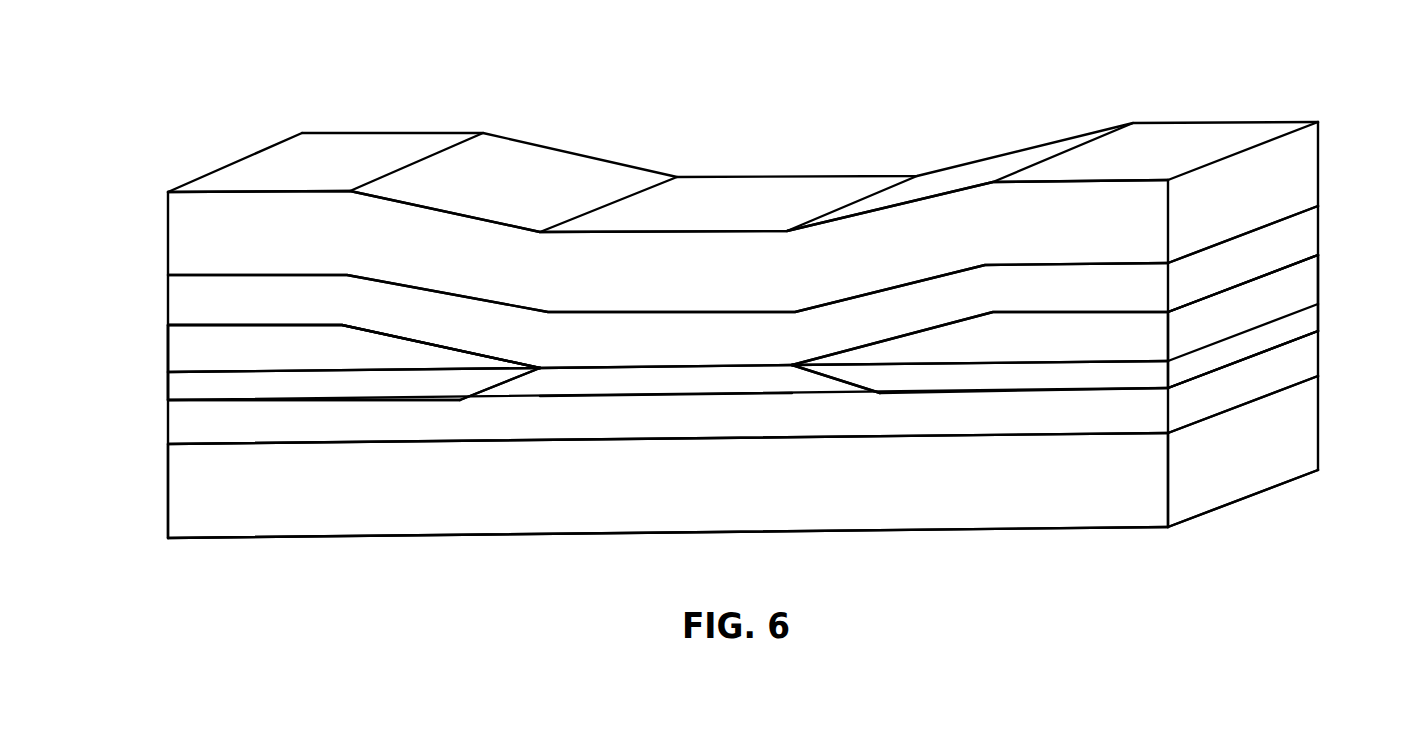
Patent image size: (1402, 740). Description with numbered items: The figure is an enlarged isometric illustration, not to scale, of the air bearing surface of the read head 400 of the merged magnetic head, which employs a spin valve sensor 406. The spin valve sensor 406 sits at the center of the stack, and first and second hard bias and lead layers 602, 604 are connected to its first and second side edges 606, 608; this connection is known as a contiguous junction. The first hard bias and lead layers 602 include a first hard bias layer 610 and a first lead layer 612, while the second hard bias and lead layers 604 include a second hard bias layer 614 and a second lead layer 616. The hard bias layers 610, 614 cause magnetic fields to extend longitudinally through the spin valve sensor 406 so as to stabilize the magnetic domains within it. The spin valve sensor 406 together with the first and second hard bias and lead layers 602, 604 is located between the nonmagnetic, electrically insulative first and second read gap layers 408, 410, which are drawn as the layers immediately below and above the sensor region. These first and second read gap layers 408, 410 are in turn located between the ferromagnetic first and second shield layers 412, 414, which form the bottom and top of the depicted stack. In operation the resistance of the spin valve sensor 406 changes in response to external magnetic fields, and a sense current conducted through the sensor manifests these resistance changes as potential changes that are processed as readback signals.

The read head 400 is at (843, 120).
The spin valve sensor 406 is at (574, 348).
The first read gap layer 408 is at (1038, 418).
The second read gap layer 410 is at (405, 307).
The first shield layer 412 is at (335, 540).
The second shield layer 414 is at (587, 168).
The first hard bias and lead layers 602 is at (162, 323).
The second hard bias and lead layers 604 is at (1325, 253).
The first side edge 606 is at (487, 386).
The second side edge 608 is at (848, 384).
The first hard bias layer 610 is at (202, 385).
The first lead layer 612 is at (207, 345).
The second hard bias layer 614 is at (1110, 370).
The second lead layer 616 is at (1118, 332).